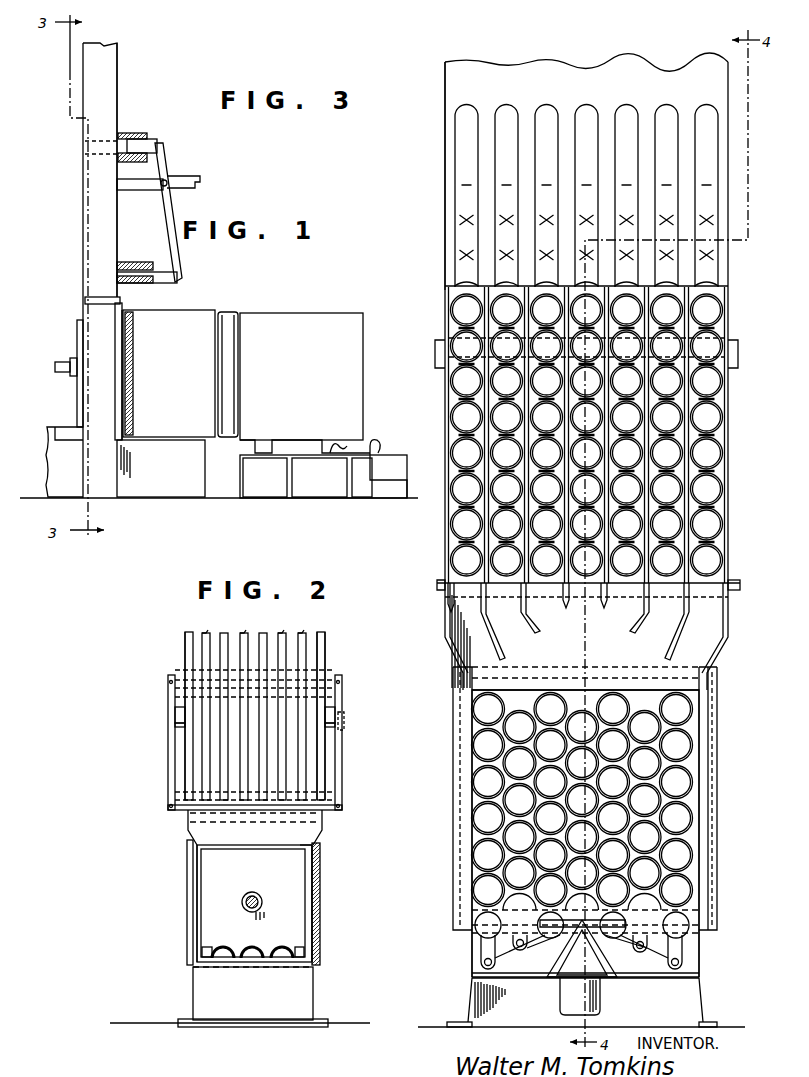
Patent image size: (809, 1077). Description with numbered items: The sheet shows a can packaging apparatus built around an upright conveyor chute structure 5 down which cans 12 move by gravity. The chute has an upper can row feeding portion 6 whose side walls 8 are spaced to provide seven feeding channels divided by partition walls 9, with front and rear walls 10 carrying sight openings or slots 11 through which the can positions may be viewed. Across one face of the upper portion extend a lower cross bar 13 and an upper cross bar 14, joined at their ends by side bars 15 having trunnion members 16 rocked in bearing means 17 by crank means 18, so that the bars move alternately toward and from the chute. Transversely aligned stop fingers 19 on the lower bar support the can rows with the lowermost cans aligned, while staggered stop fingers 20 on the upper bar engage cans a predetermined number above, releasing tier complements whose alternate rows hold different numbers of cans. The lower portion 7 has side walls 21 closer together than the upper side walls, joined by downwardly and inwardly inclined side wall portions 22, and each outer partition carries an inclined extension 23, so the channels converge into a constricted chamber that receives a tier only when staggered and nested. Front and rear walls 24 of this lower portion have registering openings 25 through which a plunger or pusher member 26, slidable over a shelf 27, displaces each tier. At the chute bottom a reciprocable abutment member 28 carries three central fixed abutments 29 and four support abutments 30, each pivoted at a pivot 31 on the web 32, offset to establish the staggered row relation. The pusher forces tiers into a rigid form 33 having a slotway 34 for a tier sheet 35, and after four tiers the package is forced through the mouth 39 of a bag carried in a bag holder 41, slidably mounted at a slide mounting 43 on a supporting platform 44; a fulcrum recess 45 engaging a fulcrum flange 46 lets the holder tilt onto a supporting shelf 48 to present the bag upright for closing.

In FIG. 1, the conveyor chute structure 5 is at (119, 72).
In FIG. 2, the conveyor chute structure 5 is at (327, 656).
In FIG. 3, the conveyor chute structure 5 is at (443, 203).
In FIG. 1, the upper can row feeding portion 6 is at (110, 108).
In FIG. 2, the upper can row feeding portion 6 is at (185, 643).
In FIG. 3, the upper can row feeding portion 6 is at (445, 162).
In FIG. 1, the lower portion 7 is at (106, 368).
In FIG. 2, the lower portion 7 is at (196, 876).
In FIG. 3, the lower portion 7 is at (470, 863).
In FIG. 3, the side walls 8 is at (448, 411).
In FIG. 3, the partition walls 9 is at (565, 465).
In FIG. 2, the front and rear walls 10 is at (208, 633).
In FIG. 3, the front and rear walls 10 is at (607, 72).
In FIG. 2, the sight openings or slots 11 is at (215, 756).
In FIG. 3, the sight openings or slots 11 is at (668, 108).
In FIG. 3, the cans 12 is at (706, 388).
In FIG. 1, the lower cross bar 13 is at (155, 283).
In FIG. 2, the lower cross bar 13 is at (178, 812).
In FIG. 3, the lower cross bar 13 is at (445, 584).
In FIG. 1, the upper cross bar 14 is at (144, 148).
In FIG. 2, the upper cross bar 14 is at (326, 677).
In FIG. 3, the upper cross bar 14 is at (440, 346).
In FIG. 1, the side bars 15 is at (165, 229).
In FIG. 2, the side bars 15 is at (170, 779).
In FIG. 1, the trunnion members 16 is at (167, 180).
In FIG. 2, the trunnion members 16 is at (175, 724).
In FIG. 1, the bearing means 17 is at (148, 190).
In FIG. 2, the bearing means 17 is at (180, 706).
In FIG. 1, the crank means 18 is at (198, 181).
In FIG. 2, the crank means 18 is at (343, 735).
In FIG. 1, the stop fingers 19 is at (140, 254).
In FIG. 2, the stop fingers 19 is at (312, 800).
In FIG. 3, the stop fingers 19 is at (450, 600).
In FIG. 1, the stop fingers 20 is at (85, 152).
In FIG. 3, the stop fingers 20 is at (435, 355).
In FIG. 1, the side walls 21 is at (105, 337).
In FIG. 2, the side walls 21 is at (198, 944).
In FIG. 3, the side walls 21 is at (466, 818).
In FIG. 1, the inclined side wall portions 22 is at (85, 301).
In FIG. 2, the inclined side wall portions 22 is at (320, 836).
In FIG. 3, the inclined side wall portions 22 is at (448, 650).
In FIG. 3, the inclined extension 23 is at (660, 656).
In FIG. 2, the front and rear walls 24 is at (313, 848).
In FIG. 2, the registering openings 25 is at (272, 836).
In FIG. 3, the registering openings 25 is at (515, 692).
In FIG. 1, the plunger or pusher member 26 is at (77, 399).
In FIG. 2, the plunger or pusher member 26 is at (208, 915).
In FIG. 1, the shelf 27 is at (52, 442).
In FIG. 2, the shelf 27 is at (200, 968).
In FIG. 3, the abutment member 28 is at (655, 983).
In FIG. 2, the fixed abutments 29 is at (263, 953).
In FIG. 3, the fixed abutments 29 is at (572, 940).
In FIG. 2, the support abutment 30 is at (283, 963).
In FIG. 3, the support abutment 30 is at (478, 922).
In FIG. 3, the pivot 31 is at (481, 966).
In FIG. 3, the web 32 is at (516, 985).
In FIG. 1, the rigid form 33 is at (190, 318).
In FIG. 1, the slotway 34 is at (118, 407).
In FIG. 2, the slotway 34 is at (320, 949).
In FIG. 3, the slotway 34 is at (455, 766).
In FIG. 3, the tier sheet 35 is at (720, 762).
In FIG. 1, the mouth of bag 39 is at (233, 320).
In FIG. 1, the bag holder 41 is at (310, 318).
In FIG. 1, the slidable mounting 43 is at (266, 445).
In FIG. 1, the supporting platform 44 is at (330, 492).
In FIG. 1, the fulcrum recess 45 is at (346, 445).
In FIG. 1, the fulcrum flange 46 is at (376, 447).
In FIG. 1, the supporting shelf 48 is at (386, 489).